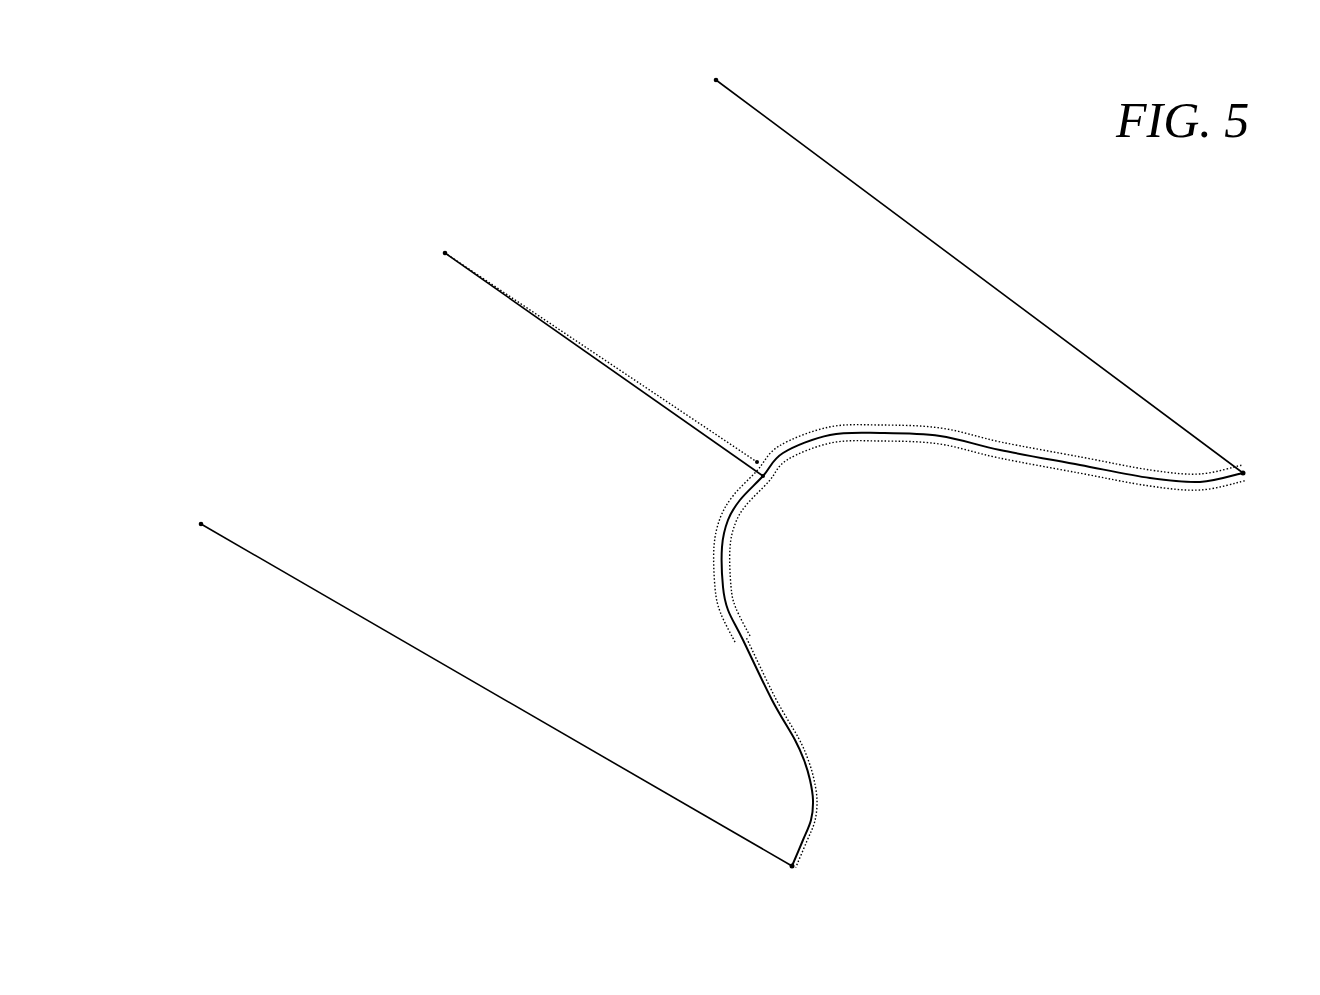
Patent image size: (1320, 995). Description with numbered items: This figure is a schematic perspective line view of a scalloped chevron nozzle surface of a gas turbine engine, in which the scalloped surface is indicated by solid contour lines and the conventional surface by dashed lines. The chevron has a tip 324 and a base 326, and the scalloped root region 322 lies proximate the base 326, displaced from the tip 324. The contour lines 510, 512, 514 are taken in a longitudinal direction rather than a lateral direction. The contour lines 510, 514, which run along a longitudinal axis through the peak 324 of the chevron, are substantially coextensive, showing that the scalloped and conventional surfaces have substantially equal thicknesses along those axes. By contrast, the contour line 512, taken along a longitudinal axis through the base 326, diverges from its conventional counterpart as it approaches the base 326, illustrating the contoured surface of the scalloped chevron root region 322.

The root region 322 is at (948, 646).
The tip 324 is at (1246, 484).
The base 326 is at (773, 486).
The contour line 510 is at (455, 677).
The contour line 512 is at (510, 301).
The contour line 514 is at (789, 141).